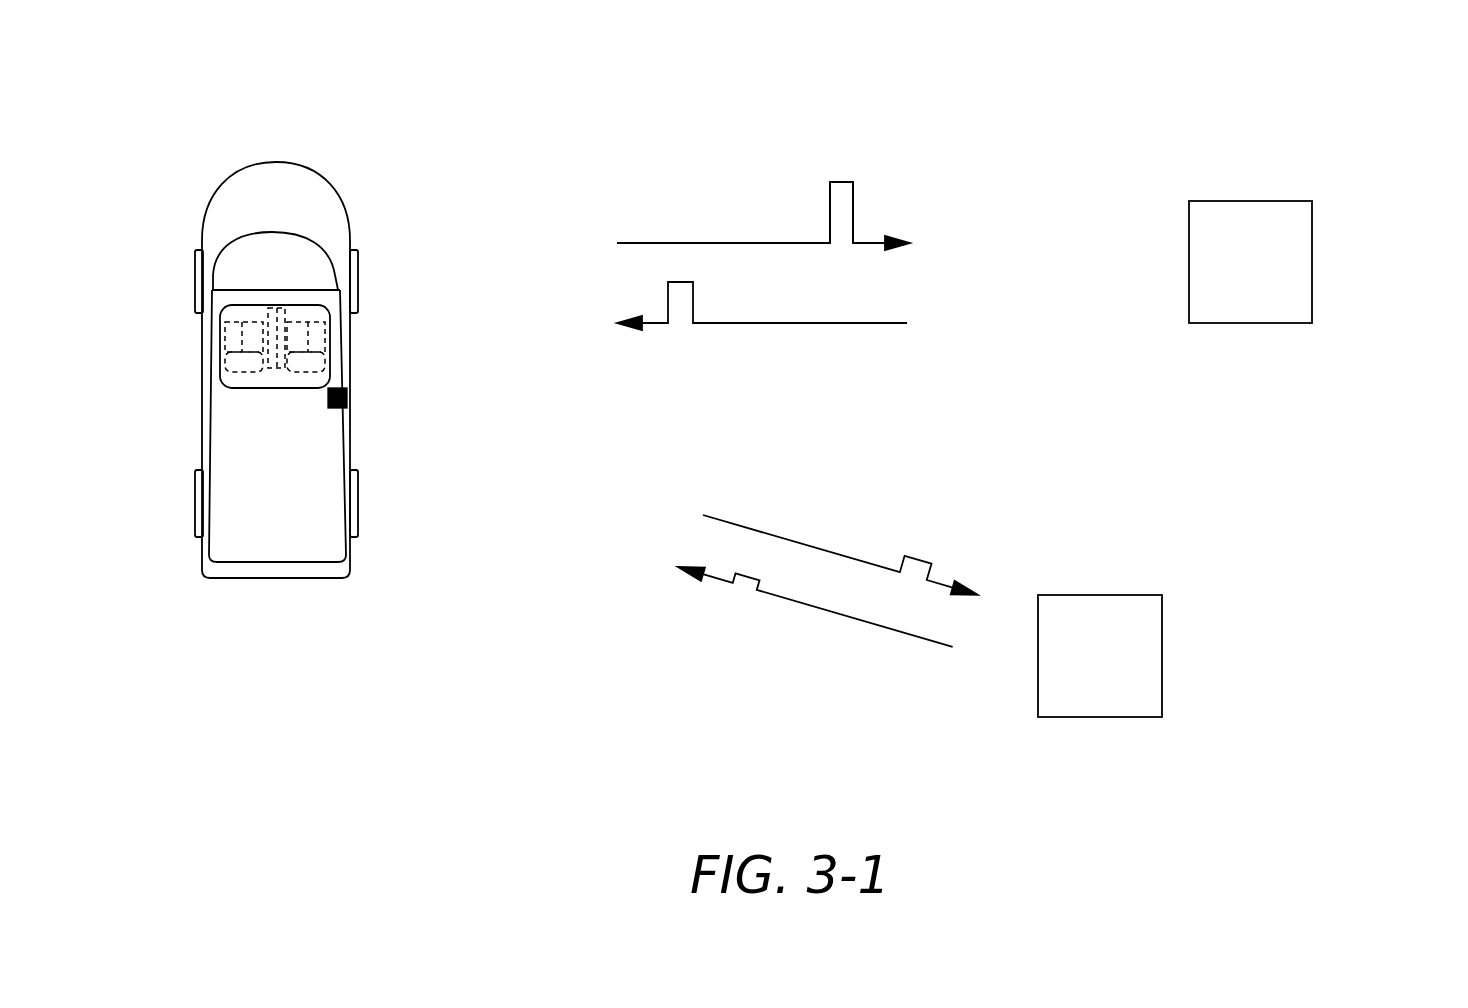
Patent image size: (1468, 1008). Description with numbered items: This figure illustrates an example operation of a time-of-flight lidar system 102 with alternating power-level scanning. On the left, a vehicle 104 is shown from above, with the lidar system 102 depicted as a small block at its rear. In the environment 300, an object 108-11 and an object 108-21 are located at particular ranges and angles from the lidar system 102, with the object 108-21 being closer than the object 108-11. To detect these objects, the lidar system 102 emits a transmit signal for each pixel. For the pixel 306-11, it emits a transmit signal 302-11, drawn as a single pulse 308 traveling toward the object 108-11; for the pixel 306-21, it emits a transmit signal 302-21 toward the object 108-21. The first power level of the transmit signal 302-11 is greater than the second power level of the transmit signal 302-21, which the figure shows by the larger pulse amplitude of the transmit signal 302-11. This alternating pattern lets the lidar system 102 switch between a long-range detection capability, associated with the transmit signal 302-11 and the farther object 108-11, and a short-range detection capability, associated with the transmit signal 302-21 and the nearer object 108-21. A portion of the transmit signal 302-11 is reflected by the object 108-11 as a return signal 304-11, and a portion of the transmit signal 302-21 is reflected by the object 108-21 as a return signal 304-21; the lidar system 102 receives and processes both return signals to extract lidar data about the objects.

The vehicle 104 is at (218, 180).
The lidar system 102 is at (337, 408).
The environment 300 is at (1281, 52).
The pixel 306-11 is at (747, 92).
The transmit signal 302-11 is at (868, 243).
The pulse 308 is at (843, 182).
The return signal 304-11 is at (705, 323).
The object 108-11 is at (1312, 258).
The transmit signal 302-21 is at (722, 520).
The pixel 306-21 is at (866, 500).
The return signal 304-21 is at (820, 608).
The object 108-21 is at (1162, 653).